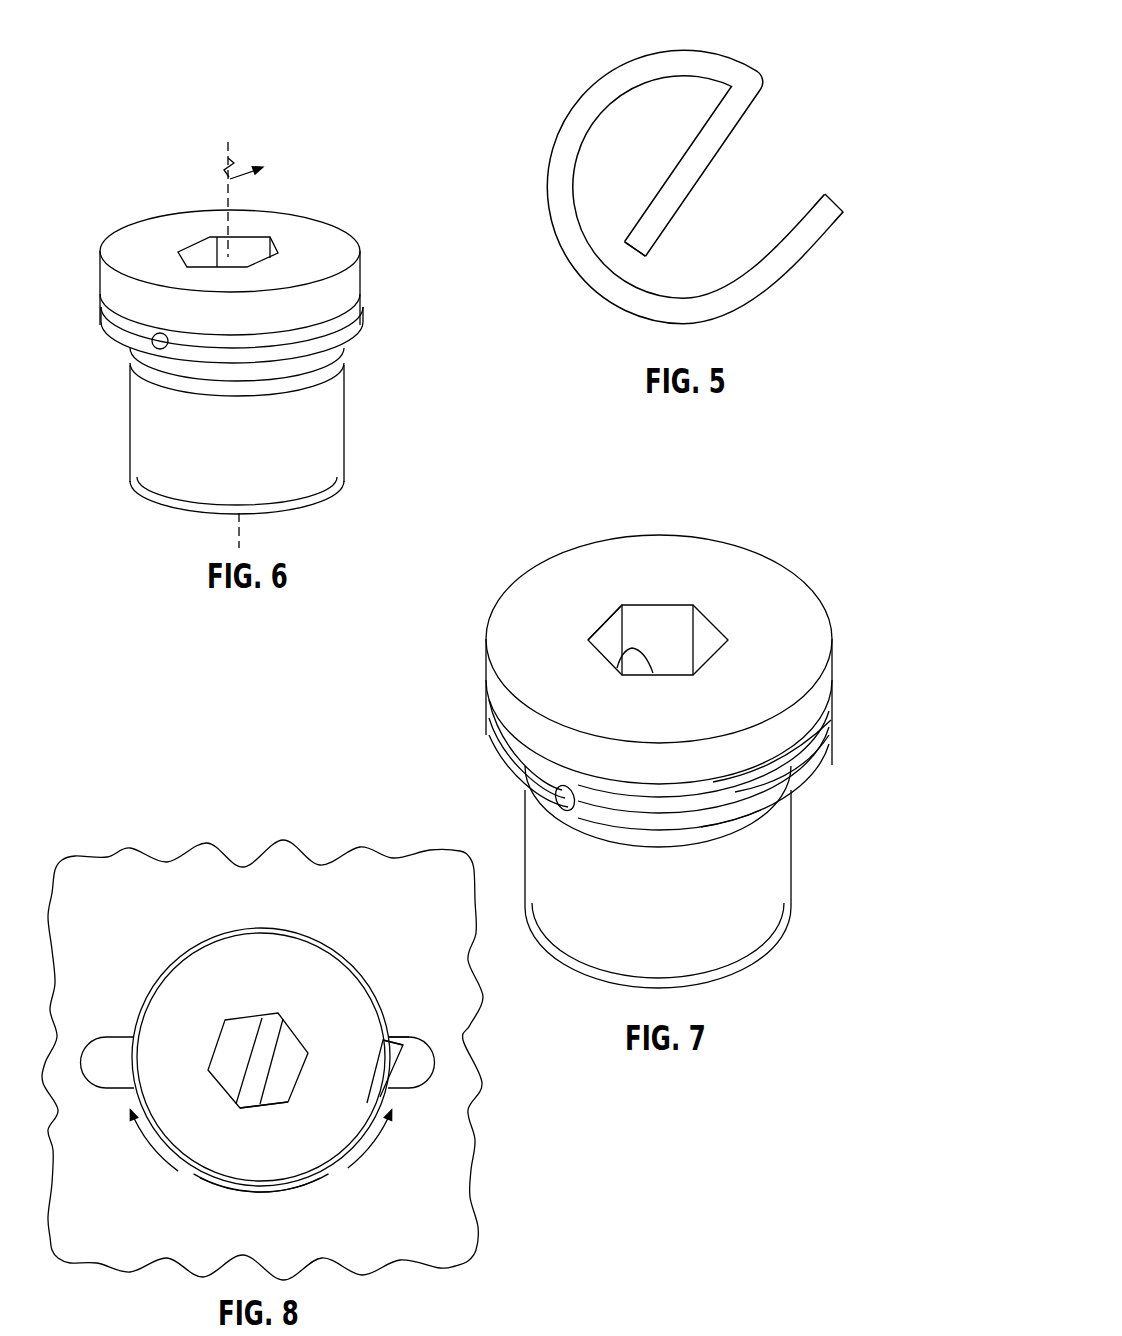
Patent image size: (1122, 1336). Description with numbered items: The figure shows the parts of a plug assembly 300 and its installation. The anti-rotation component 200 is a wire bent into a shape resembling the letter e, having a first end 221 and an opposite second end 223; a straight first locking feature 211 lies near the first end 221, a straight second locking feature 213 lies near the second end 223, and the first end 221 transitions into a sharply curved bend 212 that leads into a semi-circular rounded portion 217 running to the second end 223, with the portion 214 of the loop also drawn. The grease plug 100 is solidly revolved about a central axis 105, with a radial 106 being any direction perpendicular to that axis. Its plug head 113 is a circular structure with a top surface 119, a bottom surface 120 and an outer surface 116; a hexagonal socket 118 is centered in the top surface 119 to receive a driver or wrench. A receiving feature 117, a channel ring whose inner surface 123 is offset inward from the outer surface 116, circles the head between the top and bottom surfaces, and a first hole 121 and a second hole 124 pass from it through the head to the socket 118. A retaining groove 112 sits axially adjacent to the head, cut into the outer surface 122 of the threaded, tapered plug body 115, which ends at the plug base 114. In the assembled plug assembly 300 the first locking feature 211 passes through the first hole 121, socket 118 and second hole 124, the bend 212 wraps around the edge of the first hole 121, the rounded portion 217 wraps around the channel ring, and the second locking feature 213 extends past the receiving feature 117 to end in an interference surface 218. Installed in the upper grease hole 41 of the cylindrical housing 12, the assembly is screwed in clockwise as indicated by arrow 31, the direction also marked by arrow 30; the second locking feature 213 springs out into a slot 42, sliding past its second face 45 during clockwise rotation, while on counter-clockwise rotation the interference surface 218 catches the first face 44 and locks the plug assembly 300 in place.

In FIG. 8, the cylindrical housing 12 is at (387, 1257).
In FIG. 8, the bore edge 30 is at (368, 1150).
In FIG. 8, the arrow 31 is at (150, 1150).
In FIG. 8, the upper grease hole 41 is at (185, 1174).
In FIG. 8, the slot 42 is at (103, 1075).
In FIG. 8, the first face 44 is at (405, 1037).
In FIG. 8, the second face 45 is at (403, 1128).
In FIG. 6, the grease plug 100 is at (358, 206).
In FIG. 7, the grease plug 100 is at (500, 687).
In FIG. 8, the grease plug 100 is at (152, 997).
In FIG. 6, the central axis 105 is at (225, 145).
In FIG. 6, the radial 106 is at (243, 178).
In FIG. 6, the retaining groove 112 is at (157, 385).
In FIG. 6, the plug head 113 is at (351, 276).
In FIG. 6, the plug base 114 is at (313, 497).
In FIG. 6, the plug body 115 is at (297, 455).
In FIG. 6, the outer surface 116 is at (115, 292).
In FIG. 6, the receiving feature 117 is at (122, 330).
In FIG. 7, the receiving feature 117 is at (642, 795).
In FIG. 8, the receiving feature 117 is at (227, 1182).
In FIG. 6, the socket 118 is at (203, 237).
In FIG. 7, the socket 118 is at (655, 602).
In FIG. 8, the socket 118 is at (235, 1020).
In FIG. 6, the top surface 119 is at (140, 240).
In FIG. 6, the bottom surface 120 is at (351, 307).
In FIG. 6, the first hole 121 is at (158, 340).
In FIG. 7, the first hole 121 is at (750, 797).
In FIG. 6, the outer surface 122 is at (163, 470).
In FIG. 6, the inner surface 123 is at (312, 332).
In FIG. 7, the second hole 124 is at (620, 648).
In FIG. 5, the anti-rotation component 200 is at (576, 43).
In FIG. 7, the anti-rotation component 200 is at (527, 757).
In FIG. 8, the anti-rotation component 200 is at (317, 1170).
In FIG. 5, the first locking feature 211 is at (688, 197).
In FIG. 7, the first locking feature 211 is at (630, 667).
In FIG. 8, the first locking feature 211 is at (262, 1108).
In FIG. 5, the bend 212 is at (735, 68).
In FIG. 7, the bend 212 is at (797, 752).
In FIG. 5, the second locking feature 213 is at (813, 242).
In FIG. 7, the second locking feature 213 is at (527, 800).
In FIG. 8, the second locking feature 213 is at (395, 1083).
In FIG. 5, the loop lower portion 214 is at (568, 267).
In FIG. 7, the loop lower portion 214 is at (828, 715).
In FIG. 5, the rounded portion 217 is at (545, 193).
In FIG. 7, the interference surface 218 is at (560, 813).
In FIG. 8, the interference surface 218 is at (387, 1037).
In FIG. 5, the first end 221 is at (634, 252).
In FIG. 5, the second end 223 is at (837, 200).
In FIG. 7, the plug assembly 300 is at (568, 520).
In FIG. 8, the plug assembly 300 is at (146, 934).